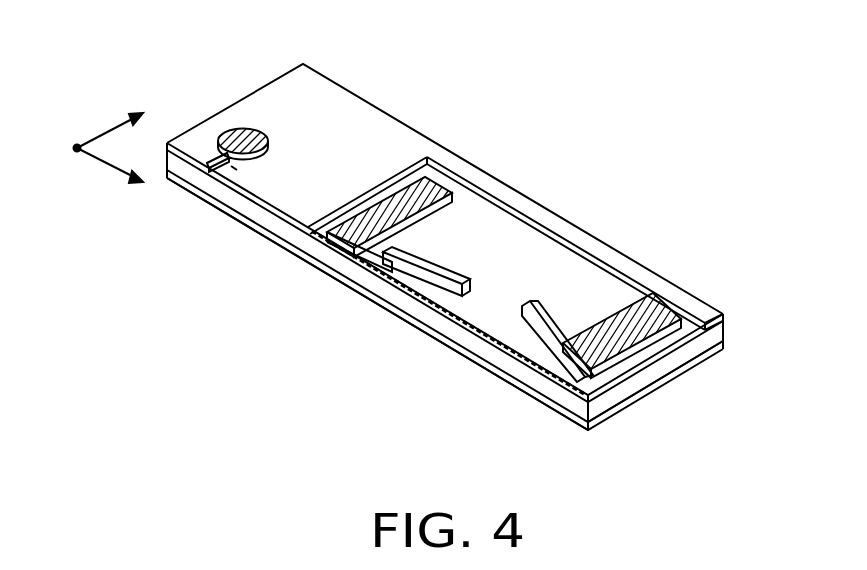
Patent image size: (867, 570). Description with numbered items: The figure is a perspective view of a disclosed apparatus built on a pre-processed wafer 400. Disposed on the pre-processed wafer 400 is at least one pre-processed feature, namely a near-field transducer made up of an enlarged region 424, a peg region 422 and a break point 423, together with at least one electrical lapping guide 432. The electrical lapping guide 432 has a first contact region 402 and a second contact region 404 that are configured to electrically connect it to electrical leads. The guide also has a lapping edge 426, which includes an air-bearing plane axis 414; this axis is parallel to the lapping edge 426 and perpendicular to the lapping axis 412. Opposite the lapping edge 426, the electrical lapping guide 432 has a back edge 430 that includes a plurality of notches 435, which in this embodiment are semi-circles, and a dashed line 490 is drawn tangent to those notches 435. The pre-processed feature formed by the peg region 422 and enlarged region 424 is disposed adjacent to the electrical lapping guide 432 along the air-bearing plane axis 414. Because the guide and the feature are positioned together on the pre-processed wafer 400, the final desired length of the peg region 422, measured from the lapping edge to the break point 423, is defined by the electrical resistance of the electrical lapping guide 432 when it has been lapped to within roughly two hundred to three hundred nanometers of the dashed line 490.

The pre-processed wafer 400 is at (154, 52).
The first contact region 402 is at (438, 172).
The second contact region 404 is at (658, 286).
The lapping axis 412 is at (104, 127).
The air-bearing plane axis 414 is at (92, 158).
The peg region 422 is at (212, 157).
The break point 423 is at (235, 170).
The enlarged region 424 is at (238, 136).
The lapping edge 426 is at (580, 429).
The back edge 430 is at (443, 263).
The electrical lapping guide 432 is at (688, 356).
The notches 435 is at (470, 298).
The dashed line 490 is at (547, 355).